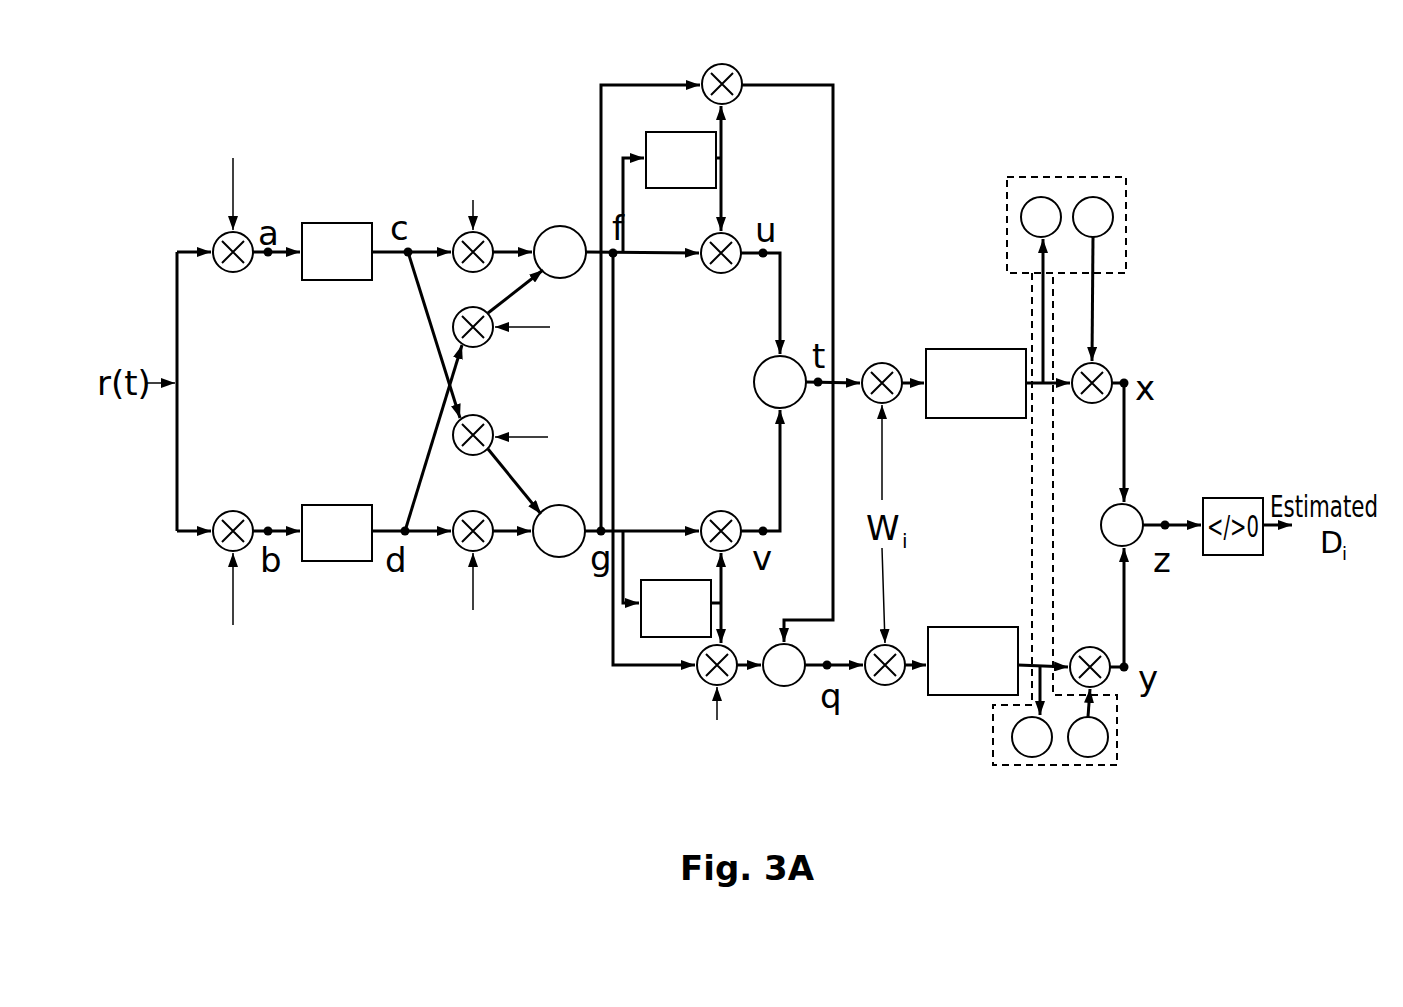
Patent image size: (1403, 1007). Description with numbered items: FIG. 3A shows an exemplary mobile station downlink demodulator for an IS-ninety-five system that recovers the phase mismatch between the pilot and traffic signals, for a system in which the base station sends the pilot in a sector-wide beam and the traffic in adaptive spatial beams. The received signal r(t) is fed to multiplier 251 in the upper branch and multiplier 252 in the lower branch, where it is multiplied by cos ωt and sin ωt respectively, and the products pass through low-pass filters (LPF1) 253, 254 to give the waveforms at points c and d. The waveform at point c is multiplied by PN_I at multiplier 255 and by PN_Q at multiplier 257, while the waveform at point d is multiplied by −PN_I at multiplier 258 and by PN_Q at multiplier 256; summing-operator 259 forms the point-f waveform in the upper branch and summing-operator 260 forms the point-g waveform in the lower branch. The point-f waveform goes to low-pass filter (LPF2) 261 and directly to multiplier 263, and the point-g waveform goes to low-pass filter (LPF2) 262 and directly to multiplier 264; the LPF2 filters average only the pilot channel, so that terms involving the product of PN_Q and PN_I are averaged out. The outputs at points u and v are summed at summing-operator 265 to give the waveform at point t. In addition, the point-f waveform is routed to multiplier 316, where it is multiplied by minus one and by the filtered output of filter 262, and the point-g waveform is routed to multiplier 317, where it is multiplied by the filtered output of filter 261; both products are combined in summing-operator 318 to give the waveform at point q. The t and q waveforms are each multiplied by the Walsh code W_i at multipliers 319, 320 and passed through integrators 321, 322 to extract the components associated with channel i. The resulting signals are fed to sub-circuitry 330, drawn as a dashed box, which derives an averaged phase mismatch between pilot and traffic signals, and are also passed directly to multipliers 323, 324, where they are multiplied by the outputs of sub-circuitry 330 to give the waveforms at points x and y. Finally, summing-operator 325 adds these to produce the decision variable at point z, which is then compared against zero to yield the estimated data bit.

The multiplier 251 is at (232, 272).
The multiplier 252 is at (232, 510).
The low-pass filter (LPF1) 253 is at (325, 280).
The low-pass filter (LPF1) 254 is at (315, 505).
The multiplier 255 is at (488, 235).
The multiplier 256 is at (456, 325).
The multiplier 257 is at (458, 440).
The multiplier 258 is at (485, 550).
The summing-operator 259 is at (580, 268).
The summing-operator 260 is at (565, 557).
The low-pass filter (LPF2) 261 is at (712, 190).
The low-pass filter (LPF2) 262 is at (712, 580).
The multiplier 263 is at (735, 235).
The multiplier 264 is at (722, 510).
The summing-operator 265 is at (755, 395).
The multiplier 316 is at (703, 683).
The multiplier 317 is at (738, 70).
The summing-operator 318 is at (790, 687).
The multiplier 319 is at (882, 362).
The multiplier 320 is at (888, 686).
The integrator 321 is at (975, 420).
The integrator 322 is at (957, 627).
The multiplier 323 is at (1092, 404).
The multiplier 324 is at (1087, 646).
The summing-operator 325 is at (1131, 505).
The sub-circuitry 330 is at (1062, 177).